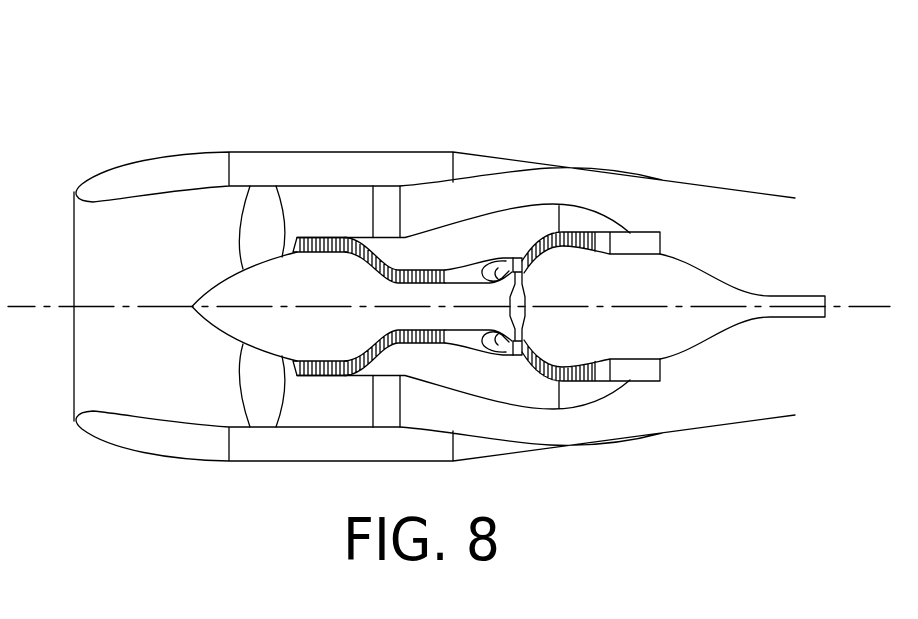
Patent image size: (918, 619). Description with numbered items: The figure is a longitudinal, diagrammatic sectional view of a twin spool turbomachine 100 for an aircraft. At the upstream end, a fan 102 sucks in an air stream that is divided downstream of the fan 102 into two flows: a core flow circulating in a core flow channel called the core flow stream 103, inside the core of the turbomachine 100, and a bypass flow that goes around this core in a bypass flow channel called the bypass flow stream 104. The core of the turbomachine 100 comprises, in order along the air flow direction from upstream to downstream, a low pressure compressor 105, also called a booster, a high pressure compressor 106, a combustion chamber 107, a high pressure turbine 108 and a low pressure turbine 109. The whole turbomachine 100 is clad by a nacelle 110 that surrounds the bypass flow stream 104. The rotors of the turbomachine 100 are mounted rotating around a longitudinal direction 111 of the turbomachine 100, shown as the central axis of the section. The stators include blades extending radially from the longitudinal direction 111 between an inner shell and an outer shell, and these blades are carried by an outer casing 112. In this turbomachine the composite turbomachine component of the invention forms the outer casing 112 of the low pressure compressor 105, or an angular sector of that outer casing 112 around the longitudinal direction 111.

The turbomachine 100 is at (449, 277).
The fan 102 is at (253, 377).
The core flow stream 103 is at (387, 343).
The bypass flow stream 104 is at (322, 407).
The low pressure compressor 105 is at (320, 238).
The high pressure compressor 106 is at (435, 272).
The combustion chamber 107 is at (490, 261).
The high pressure turbine 108 is at (516, 258).
The low pressure turbine 109 is at (583, 232).
The nacelle 110 is at (350, 152).
The longitudinal direction 111 is at (18, 306).
The outer casing 112 is at (333, 240).